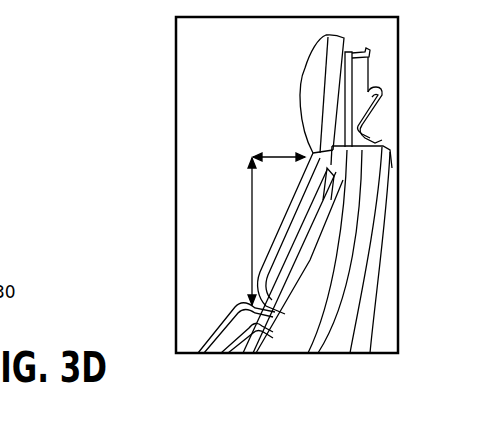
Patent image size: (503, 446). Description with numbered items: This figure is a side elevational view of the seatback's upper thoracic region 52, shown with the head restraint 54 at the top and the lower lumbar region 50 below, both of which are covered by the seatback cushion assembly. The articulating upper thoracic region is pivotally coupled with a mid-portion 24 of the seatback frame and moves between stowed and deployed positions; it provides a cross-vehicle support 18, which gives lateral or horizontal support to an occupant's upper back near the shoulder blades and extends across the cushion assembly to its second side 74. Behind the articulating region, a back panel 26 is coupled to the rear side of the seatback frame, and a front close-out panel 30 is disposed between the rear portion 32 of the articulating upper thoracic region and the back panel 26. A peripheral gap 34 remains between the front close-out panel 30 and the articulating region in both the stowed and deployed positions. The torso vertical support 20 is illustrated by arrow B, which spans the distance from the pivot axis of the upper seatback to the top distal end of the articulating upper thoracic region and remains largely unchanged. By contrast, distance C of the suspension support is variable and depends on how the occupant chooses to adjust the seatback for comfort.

The head restraint 54 is at (318, 78).
The torso vertical support 20 is at (384, 148).
The rear portion 32 is at (332, 165).
The back panel 26 is at (372, 192).
The second side 74 is at (335, 212).
The peripheral gap 34 is at (357, 242).
The front close-out panel 30 is at (345, 258).
The cross-vehicle support 18 is at (302, 276).
The mid-portion 24 is at (370, 334).
The upper thoracic region 52 is at (277, 246).
The lower lumbar region 50 is at (216, 327).
The distance C of the suspension support C is at (278, 155).
The arrow B is at (253, 200).